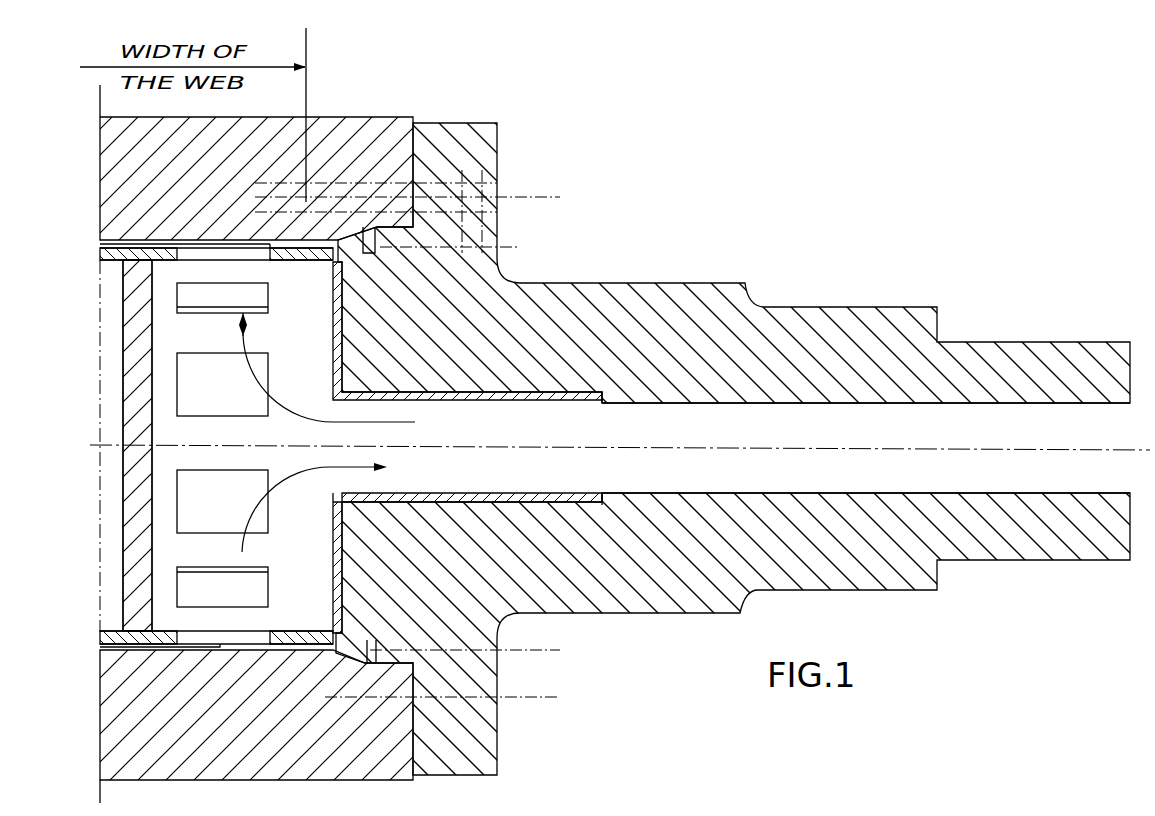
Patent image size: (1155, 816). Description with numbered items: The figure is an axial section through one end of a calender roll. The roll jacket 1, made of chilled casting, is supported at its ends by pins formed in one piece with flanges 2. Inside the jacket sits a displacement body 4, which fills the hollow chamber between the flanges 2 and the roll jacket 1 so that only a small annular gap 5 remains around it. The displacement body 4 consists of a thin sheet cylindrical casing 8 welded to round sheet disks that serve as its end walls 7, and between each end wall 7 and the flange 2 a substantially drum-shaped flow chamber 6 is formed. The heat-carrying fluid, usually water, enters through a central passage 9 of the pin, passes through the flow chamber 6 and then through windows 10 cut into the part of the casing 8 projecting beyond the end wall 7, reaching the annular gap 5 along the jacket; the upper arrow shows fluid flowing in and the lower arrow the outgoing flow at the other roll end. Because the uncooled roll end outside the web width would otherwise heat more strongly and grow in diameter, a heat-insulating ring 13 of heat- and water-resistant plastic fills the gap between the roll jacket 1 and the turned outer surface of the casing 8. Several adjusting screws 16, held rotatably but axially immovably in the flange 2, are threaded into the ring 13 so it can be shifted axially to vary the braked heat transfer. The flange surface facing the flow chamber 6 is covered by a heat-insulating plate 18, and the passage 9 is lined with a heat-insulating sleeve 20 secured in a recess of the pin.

The roll jacket 1 is at (347, 125).
The flange 2 is at (497, 135).
The displacement body 4 is at (113, 305).
The annular gap 5 is at (130, 663).
The flow chamber 6 is at (283, 540).
The end wall 7 is at (137, 368).
The cylindrical casing 8 is at (118, 240).
The central passage 9 is at (688, 439).
The windows 10 is at (265, 295).
The heat-insulating ring 13 is at (287, 633).
The adjusting screws 16 is at (470, 245).
The plate 18 is at (333, 570).
The sleeve 20 is at (440, 497).